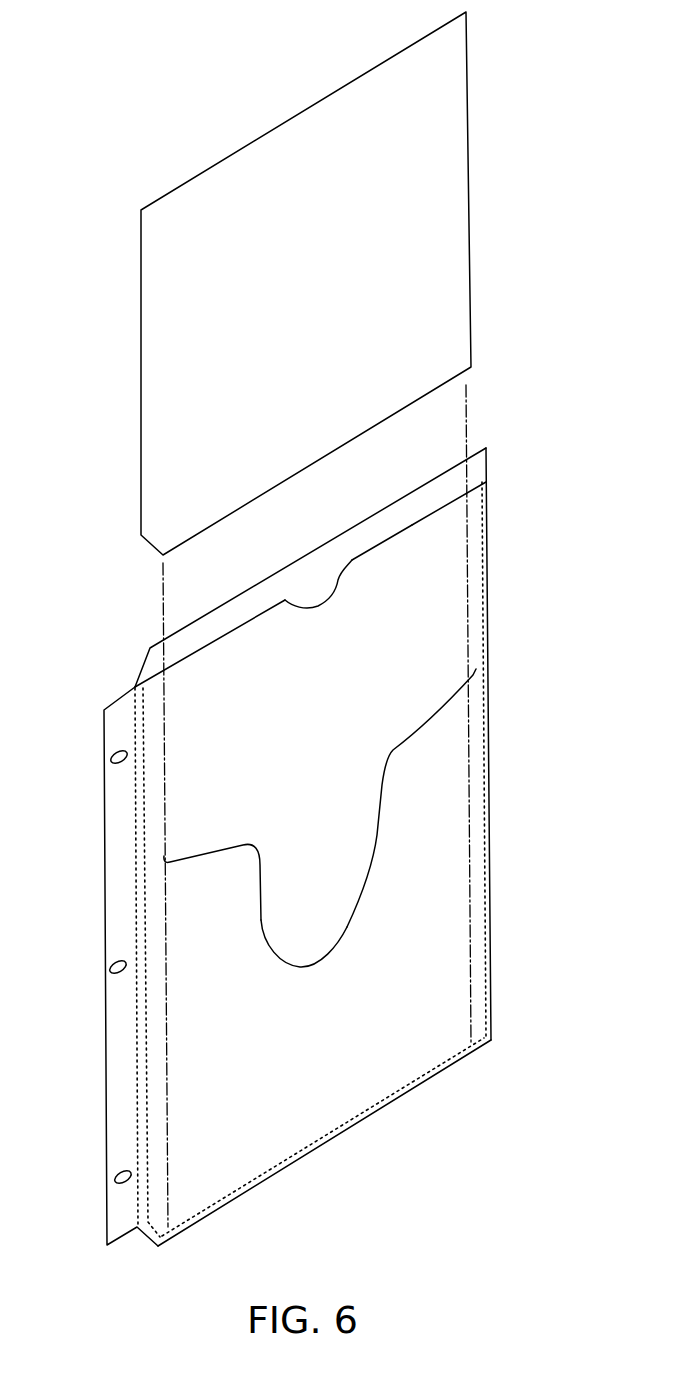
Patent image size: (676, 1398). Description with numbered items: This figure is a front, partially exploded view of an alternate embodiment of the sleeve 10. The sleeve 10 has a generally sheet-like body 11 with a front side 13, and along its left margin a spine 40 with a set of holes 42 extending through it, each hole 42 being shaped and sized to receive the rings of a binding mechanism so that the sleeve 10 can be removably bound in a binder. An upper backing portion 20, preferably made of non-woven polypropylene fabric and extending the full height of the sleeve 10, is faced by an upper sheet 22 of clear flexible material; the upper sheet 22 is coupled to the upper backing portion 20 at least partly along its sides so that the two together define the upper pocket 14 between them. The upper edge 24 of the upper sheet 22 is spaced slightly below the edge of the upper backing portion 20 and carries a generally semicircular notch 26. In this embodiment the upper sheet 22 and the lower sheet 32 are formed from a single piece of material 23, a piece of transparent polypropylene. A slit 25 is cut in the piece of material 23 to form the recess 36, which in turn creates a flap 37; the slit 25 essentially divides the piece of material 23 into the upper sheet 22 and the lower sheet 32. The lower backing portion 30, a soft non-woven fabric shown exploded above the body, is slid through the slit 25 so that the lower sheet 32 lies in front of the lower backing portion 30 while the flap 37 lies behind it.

The sleeve 10 is at (88, 379).
The sheet-like body 11 is at (460, 520).
The front side 13 is at (460, 538).
The upper pocket 14 is at (494, 616).
The upper backing portion 20 is at (215, 618).
The upper sheet 22 is at (277, 612).
The piece of material 23 is at (463, 862).
The upper edge of the upper sheet 24 is at (412, 524).
The slit 25 is at (263, 921).
The semicircular notch 26 is at (338, 577).
The lower backing portion 30 is at (466, 200).
The lower sheet 32 is at (433, 1047).
The recess 36 is at (373, 856).
The flap 37 is at (327, 938).
The spine 40 is at (112, 1126).
The holes 42 is at (109, 762).